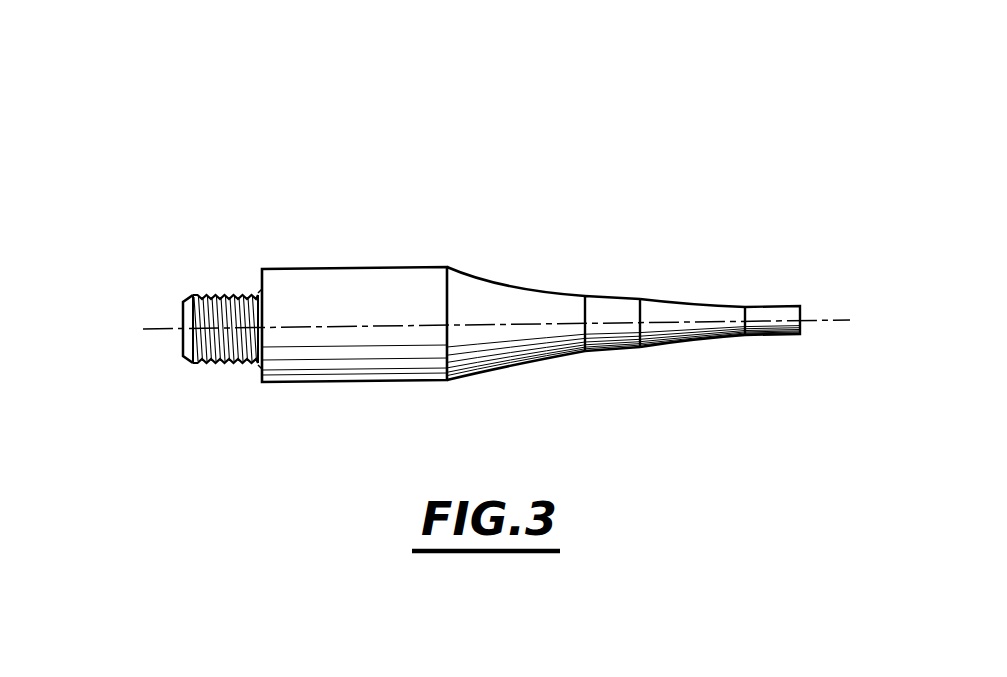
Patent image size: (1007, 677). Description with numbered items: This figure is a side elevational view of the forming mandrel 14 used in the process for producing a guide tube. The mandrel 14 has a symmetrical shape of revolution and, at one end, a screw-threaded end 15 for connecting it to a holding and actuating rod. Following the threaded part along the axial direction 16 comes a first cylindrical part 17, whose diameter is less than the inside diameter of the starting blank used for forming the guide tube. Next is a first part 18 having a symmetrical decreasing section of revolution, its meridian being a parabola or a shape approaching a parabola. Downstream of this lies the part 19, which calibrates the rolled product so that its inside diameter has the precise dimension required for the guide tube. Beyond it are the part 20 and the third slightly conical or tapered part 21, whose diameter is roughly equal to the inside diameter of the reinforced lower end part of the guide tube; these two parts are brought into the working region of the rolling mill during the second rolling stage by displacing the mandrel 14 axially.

The mandrel 14 is at (552, 205).
The screw-threaded end 15 is at (220, 310).
The axial direction 16 is at (160, 330).
The first cylindrical part 17 is at (348, 277).
The first part having a decreasing section 18 is at (511, 298).
The calibrating part 19 is at (613, 302).
The mandrel part 20 is at (690, 312).
The third slightly conical or tapered part 21 is at (778, 313).